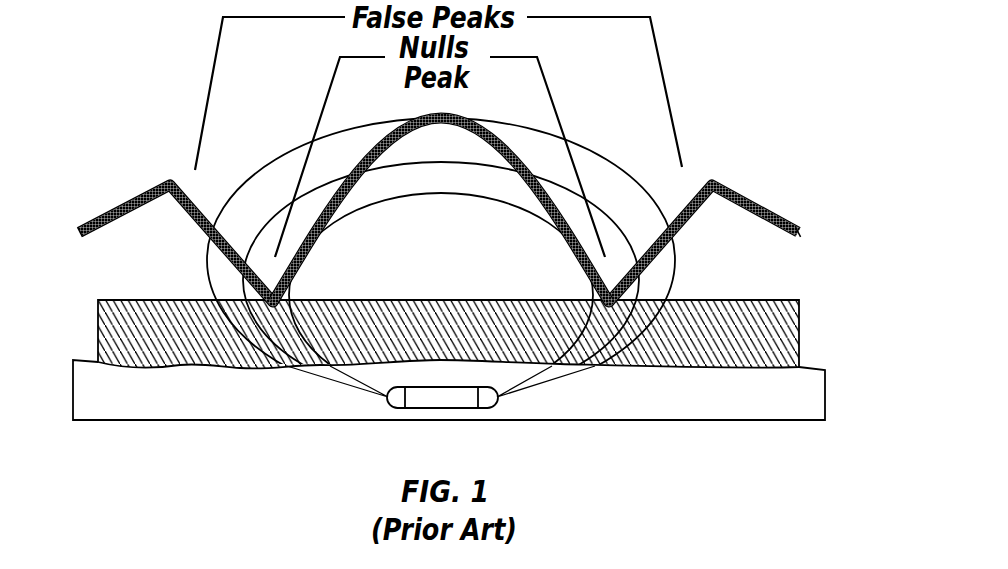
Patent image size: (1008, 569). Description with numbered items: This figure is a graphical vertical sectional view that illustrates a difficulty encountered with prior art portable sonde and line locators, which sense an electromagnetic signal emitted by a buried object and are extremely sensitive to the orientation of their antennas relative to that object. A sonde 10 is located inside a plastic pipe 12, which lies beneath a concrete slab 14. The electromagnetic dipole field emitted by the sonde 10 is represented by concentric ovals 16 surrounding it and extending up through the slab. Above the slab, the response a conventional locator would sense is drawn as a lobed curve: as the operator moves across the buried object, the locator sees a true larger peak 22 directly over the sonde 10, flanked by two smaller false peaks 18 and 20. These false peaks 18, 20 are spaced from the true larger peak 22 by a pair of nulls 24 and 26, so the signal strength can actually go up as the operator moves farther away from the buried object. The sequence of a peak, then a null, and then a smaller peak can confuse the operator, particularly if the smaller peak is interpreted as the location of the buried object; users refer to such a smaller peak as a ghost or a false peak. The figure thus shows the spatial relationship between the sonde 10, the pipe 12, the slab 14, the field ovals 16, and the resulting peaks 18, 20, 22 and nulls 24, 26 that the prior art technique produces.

The sonde 10 is at (460, 398).
The plastic pipe 12 is at (812, 396).
The concrete slab 14 is at (786, 326).
The concentric ovals 16 is at (201, 257).
The false peak 18 is at (168, 181).
The false peak 20 is at (714, 181).
The true larger peak 22 is at (440, 116).
The null 24 is at (273, 292).
The null 26 is at (609, 292).